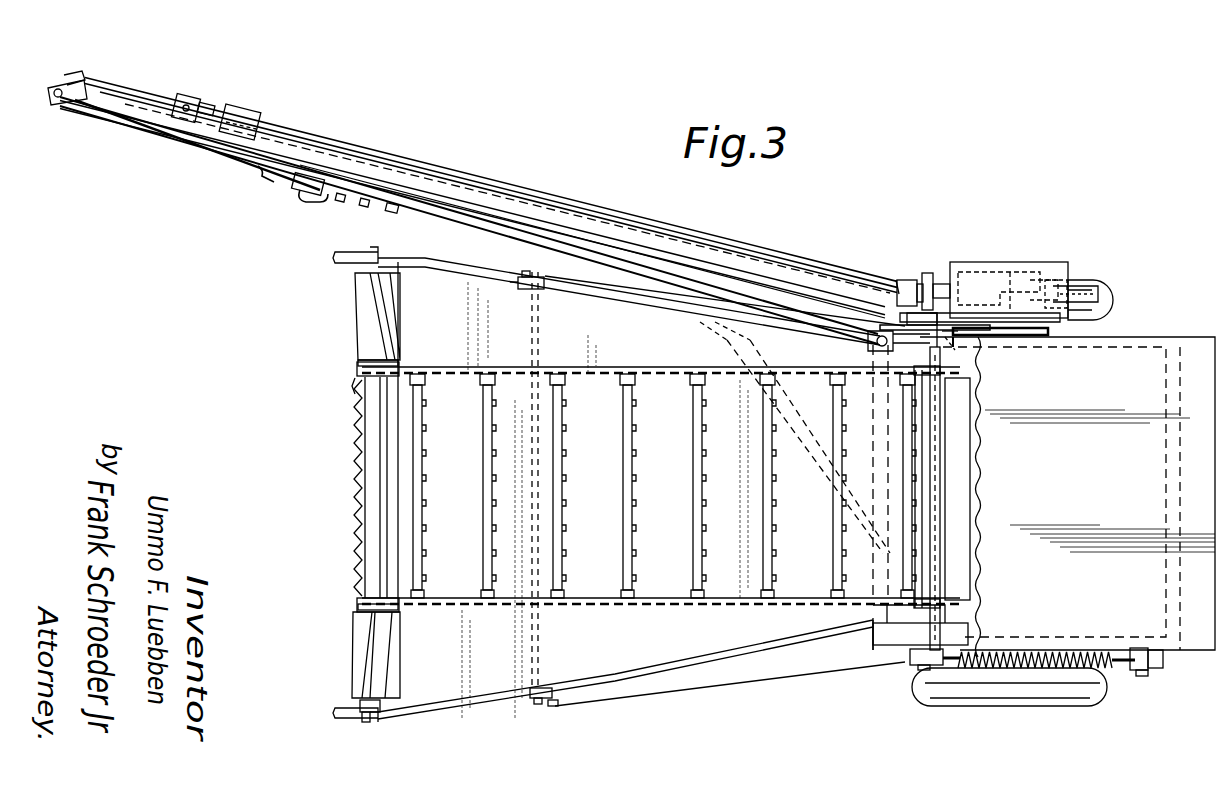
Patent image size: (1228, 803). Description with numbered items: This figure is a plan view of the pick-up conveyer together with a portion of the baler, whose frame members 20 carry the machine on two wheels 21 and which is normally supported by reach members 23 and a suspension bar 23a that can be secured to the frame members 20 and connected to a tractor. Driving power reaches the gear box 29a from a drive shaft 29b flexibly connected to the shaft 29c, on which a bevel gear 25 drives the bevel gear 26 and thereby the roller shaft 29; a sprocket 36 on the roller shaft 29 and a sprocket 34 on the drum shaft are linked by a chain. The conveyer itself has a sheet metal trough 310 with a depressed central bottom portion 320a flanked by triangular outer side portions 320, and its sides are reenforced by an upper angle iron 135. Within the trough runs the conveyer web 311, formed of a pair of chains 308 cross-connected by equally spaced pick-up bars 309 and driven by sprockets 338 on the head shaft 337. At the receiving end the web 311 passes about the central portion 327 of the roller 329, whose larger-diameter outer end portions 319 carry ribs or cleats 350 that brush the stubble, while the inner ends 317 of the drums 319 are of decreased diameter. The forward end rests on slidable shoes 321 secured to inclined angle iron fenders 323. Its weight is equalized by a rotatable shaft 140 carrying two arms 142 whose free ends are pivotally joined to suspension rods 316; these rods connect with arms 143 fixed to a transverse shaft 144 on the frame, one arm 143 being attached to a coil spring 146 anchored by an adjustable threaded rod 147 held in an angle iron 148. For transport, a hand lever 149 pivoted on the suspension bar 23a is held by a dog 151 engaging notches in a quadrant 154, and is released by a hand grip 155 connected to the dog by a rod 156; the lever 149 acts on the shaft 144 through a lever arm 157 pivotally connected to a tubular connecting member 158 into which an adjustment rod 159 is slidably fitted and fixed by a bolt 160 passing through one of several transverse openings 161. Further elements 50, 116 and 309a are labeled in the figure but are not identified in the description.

The pivot eye 50 is at (76, 74).
The rod 156 is at (328, 152).
The dog 151 is at (356, 160).
The drive shaft 29b is at (414, 146).
The suspension bar 23a is at (438, 200).
The reach members 23 is at (538, 257).
The suspension rods 316 is at (612, 276).
The tubular connecting member 158 is at (669, 266).
The quadrant 154 is at (262, 170).
The hand grip 155 is at (293, 182).
The hand lever 149 is at (300, 195).
The adjustment rod 159 is at (338, 201).
The bolt 160 is at (364, 206).
The transverse openings 161 is at (392, 212).
The lever arm 157 is at (964, 280).
The shaft 29c is at (1013, 266).
The bevel gear 25 is at (1054, 280).
The gear box 29a is at (1078, 282).
The bevel gear 26 is at (1010, 282).
The wheels 21 is at (1100, 296).
The arm 143 is at (913, 325).
The roller shaft 29 is at (1040, 331).
The sprocket 34 is at (978, 338).
The sprockets 338 is at (942, 371).
The sprocket 36 is at (1020, 338).
The conveyer-web drive head shaft 337 is at (940, 436).
The post 116 is at (962, 480).
The frame members 20 is at (1160, 596).
The transverse shaft 144 is at (930, 633).
The coil spring 146 is at (997, 668).
The adjustable threaded rod 147 is at (1163, 662).
The angle iron 148 is at (1144, 674).
The chains 308 is at (606, 374).
The crop pick-up slats or bars 309 is at (358, 430).
The clip 309a is at (356, 524).
The conveyer web 311 is at (414, 459).
The central portion 327 is at (370, 474).
The roller 329 is at (346, 312).
The outer end portions 319 is at (368, 329).
The ribs or cleats 350 is at (373, 341).
The inner ends 317 is at (358, 366).
The slidable shoes 321 is at (328, 266).
The inclined angle iron fender 323 is at (372, 712).
The outer side portions 320 is at (438, 285).
The sheet metal trough 310 is at (458, 702).
The upper reenforcing angle iron 135 is at (731, 655).
The arms 142 is at (516, 278).
The rotatable shaft 140 is at (540, 630).
The central bottom portion 320a is at (688, 452).